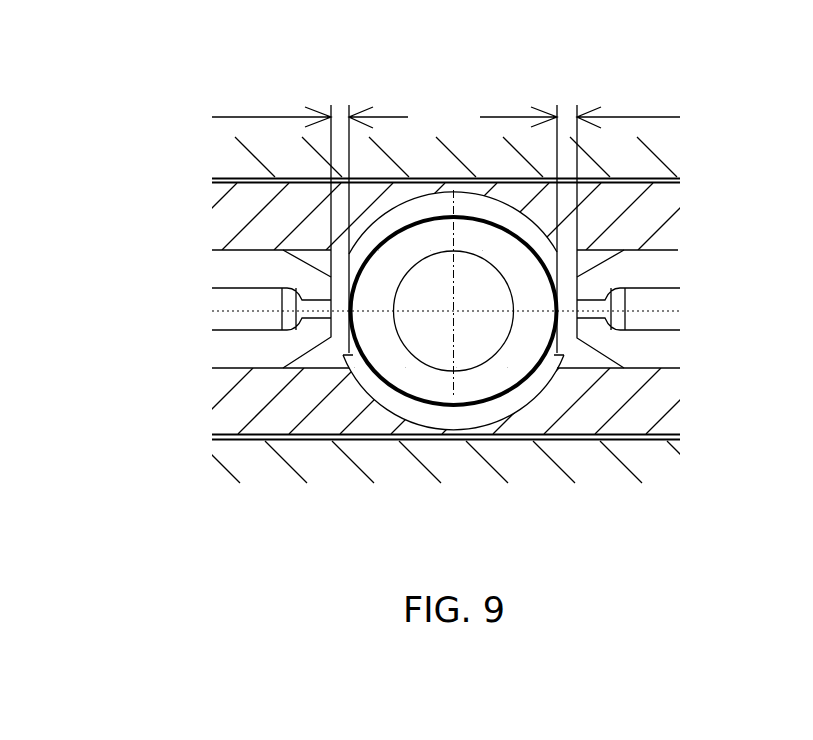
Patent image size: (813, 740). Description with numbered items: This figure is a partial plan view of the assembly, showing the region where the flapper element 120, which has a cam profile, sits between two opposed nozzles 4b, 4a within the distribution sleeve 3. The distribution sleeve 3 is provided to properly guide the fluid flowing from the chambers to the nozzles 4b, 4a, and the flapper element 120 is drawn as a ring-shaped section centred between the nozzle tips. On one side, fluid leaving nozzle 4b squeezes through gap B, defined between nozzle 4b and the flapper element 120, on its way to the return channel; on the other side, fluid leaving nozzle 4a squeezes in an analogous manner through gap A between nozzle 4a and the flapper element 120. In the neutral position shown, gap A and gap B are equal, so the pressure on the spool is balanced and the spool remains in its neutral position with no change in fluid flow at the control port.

The distribution sleeve 3 is at (238, 508).
The nozzle 4a is at (672, 363).
The nozzle 4b is at (216, 358).
The flapper element 120 is at (531, 381).
The gap A is at (580, 108).
The gap B is at (310, 107).